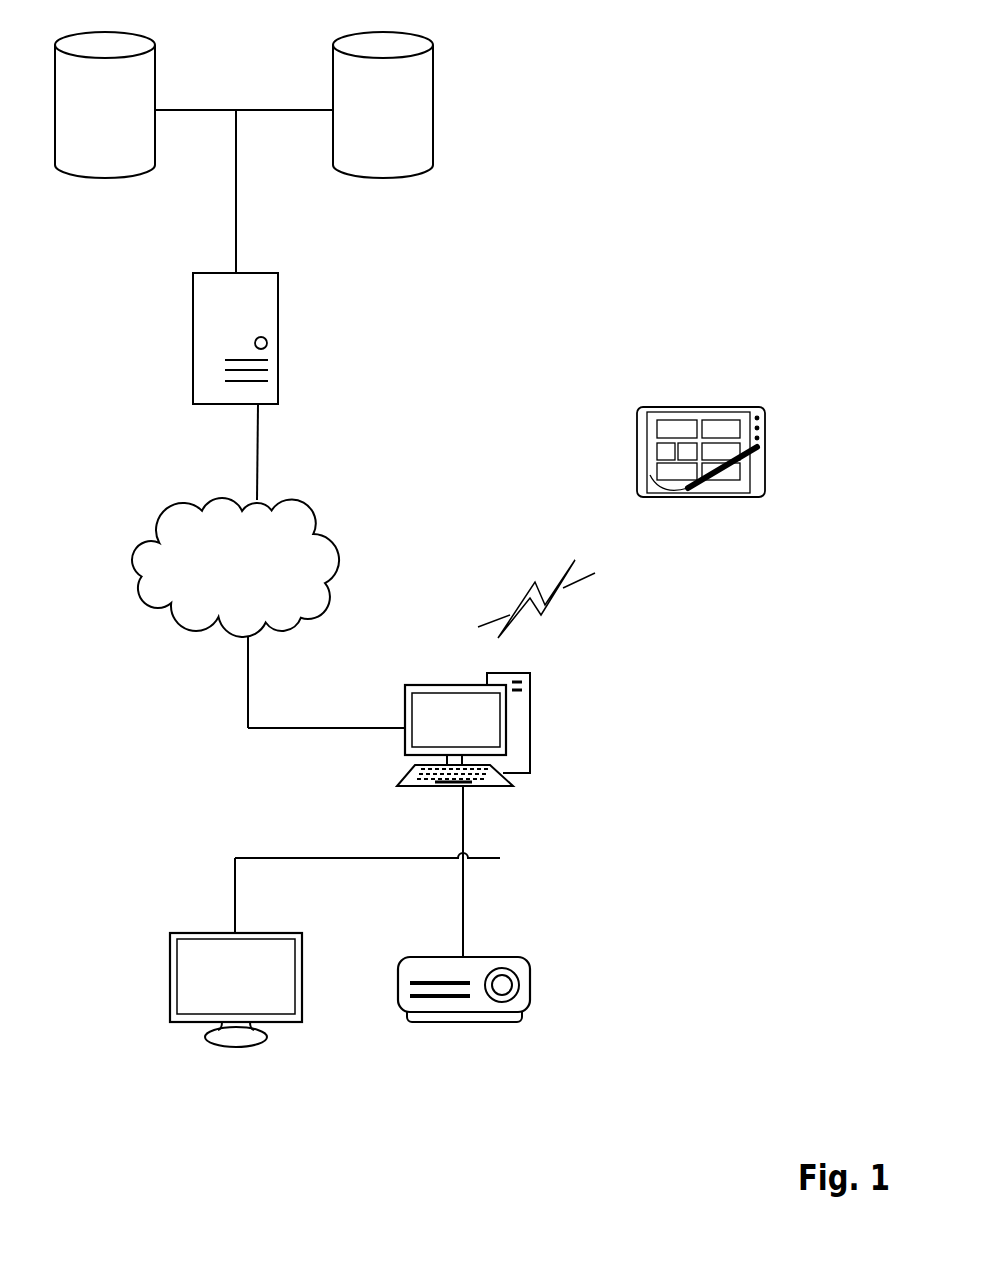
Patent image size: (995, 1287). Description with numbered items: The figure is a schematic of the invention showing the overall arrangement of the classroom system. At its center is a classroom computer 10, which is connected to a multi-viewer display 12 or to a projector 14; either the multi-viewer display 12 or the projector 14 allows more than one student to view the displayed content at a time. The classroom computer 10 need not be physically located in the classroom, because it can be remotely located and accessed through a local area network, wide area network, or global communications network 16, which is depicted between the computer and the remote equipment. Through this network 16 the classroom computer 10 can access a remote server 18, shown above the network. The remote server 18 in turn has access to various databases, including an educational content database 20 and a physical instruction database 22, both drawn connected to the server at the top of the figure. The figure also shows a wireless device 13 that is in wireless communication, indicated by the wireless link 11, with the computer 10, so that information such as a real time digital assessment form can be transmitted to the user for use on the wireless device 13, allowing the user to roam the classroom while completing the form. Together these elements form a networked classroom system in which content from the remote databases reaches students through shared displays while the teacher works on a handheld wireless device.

The classroom computer 10 is at (530, 720).
The wireless connection 11 is at (572, 571).
The multi-viewer display 12 is at (302, 968).
The wireless device 13 is at (718, 409).
The projector 14 is at (530, 992).
The global communications network 16 is at (335, 533).
The remote server 18 is at (278, 320).
The educational content database 20 is at (155, 60).
The physical instruction database 22 is at (433, 60).